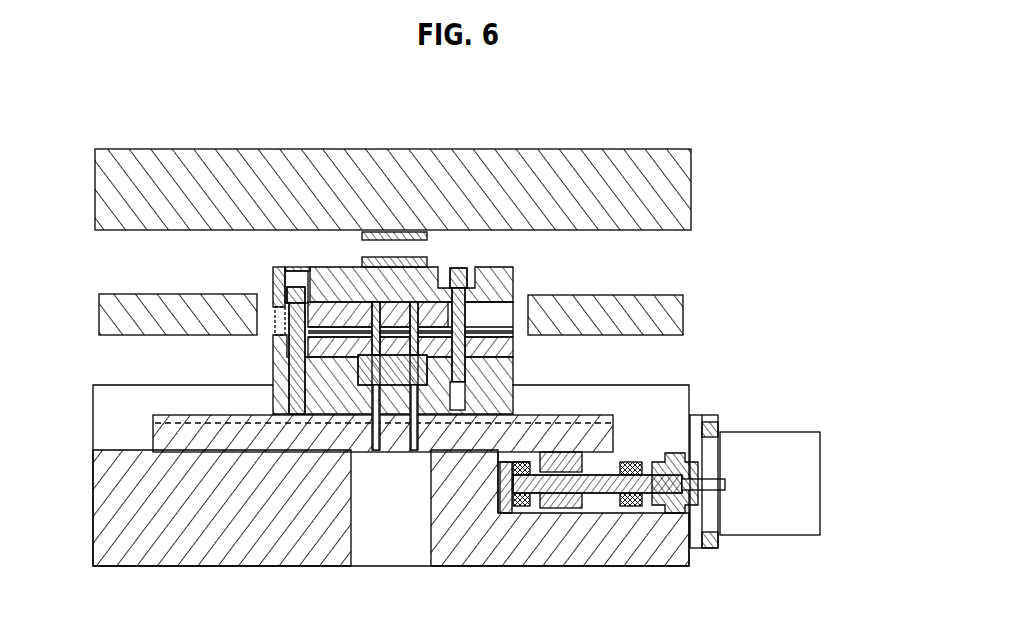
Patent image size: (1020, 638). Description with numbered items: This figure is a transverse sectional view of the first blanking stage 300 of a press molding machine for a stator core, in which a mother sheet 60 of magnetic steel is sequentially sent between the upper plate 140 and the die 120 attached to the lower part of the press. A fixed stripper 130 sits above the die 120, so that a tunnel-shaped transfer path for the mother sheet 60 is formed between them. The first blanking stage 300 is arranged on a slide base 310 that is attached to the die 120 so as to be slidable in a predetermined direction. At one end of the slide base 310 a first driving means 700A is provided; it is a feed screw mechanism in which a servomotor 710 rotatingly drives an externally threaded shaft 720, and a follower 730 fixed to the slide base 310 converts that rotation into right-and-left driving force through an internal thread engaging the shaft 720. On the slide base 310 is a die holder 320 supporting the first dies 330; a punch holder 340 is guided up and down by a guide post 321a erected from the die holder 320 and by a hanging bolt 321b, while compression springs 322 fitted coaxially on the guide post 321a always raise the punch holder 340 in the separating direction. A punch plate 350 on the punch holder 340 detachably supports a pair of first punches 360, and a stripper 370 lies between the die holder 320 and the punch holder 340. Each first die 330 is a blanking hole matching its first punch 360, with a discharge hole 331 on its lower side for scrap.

The mother sheet 60 is at (392, 345).
The die 120 is at (92, 498).
The fixed stripper 130 is at (685, 308).
The upper plate 140 is at (692, 190).
The first blanking stage 300 is at (501, 246).
The slide base 310 is at (152, 432).
The die holder 320 is at (280, 395).
The guide post 321a is at (275, 368).
The hanging bolt 321b is at (513, 345).
The compression springs 322 is at (275, 285).
The first dies 330 is at (364, 390).
The discharge hole 331 is at (413, 450).
The punch holder 340 is at (513, 278).
The punch plate 350 is at (328, 304).
The first punches 360 is at (356, 290).
The stripper 370 is at (273, 345).
The first driving means 700A is at (765, 408).
The servomotor 710 is at (772, 532).
The externally threaded shaft 720 is at (598, 495).
The follower 730 is at (563, 510).